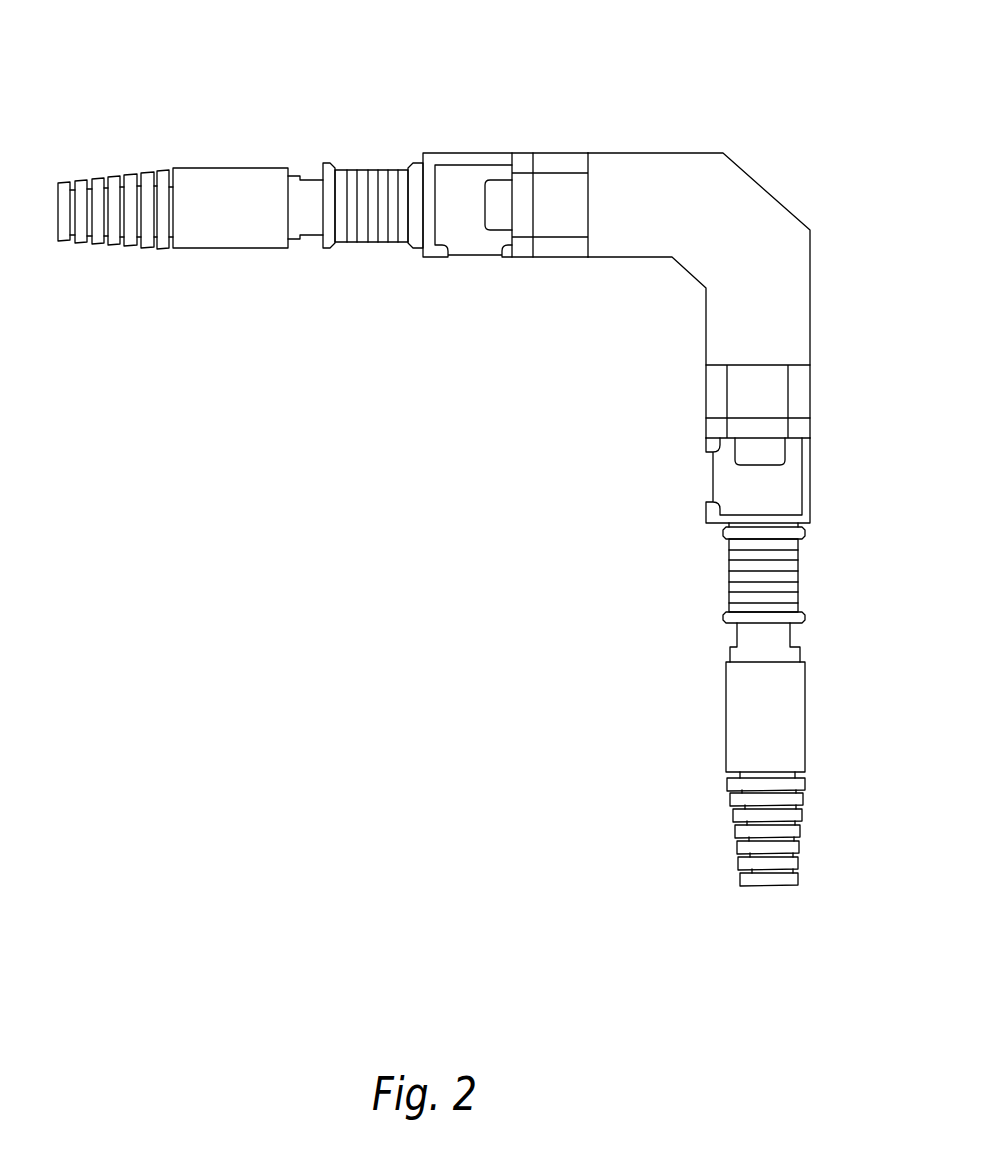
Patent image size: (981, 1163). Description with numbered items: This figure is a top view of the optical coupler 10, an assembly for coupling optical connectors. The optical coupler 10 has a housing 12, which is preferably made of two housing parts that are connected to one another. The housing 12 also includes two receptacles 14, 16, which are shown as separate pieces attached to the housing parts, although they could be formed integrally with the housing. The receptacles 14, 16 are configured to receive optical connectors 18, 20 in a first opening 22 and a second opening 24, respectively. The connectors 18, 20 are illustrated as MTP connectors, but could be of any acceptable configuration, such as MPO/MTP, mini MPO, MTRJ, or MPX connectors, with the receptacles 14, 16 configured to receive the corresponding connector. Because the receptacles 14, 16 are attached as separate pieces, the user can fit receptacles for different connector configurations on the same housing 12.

The optical coupler 10 is at (757, 93).
The housing 12 is at (762, 185).
The receptacle 14 is at (481, 152).
The receptacle 16 is at (812, 457).
The optical connector 18 is at (243, 249).
The optical connector 20 is at (725, 712).
The first opening 22 is at (413, 249).
The second opening 24 is at (716, 533).